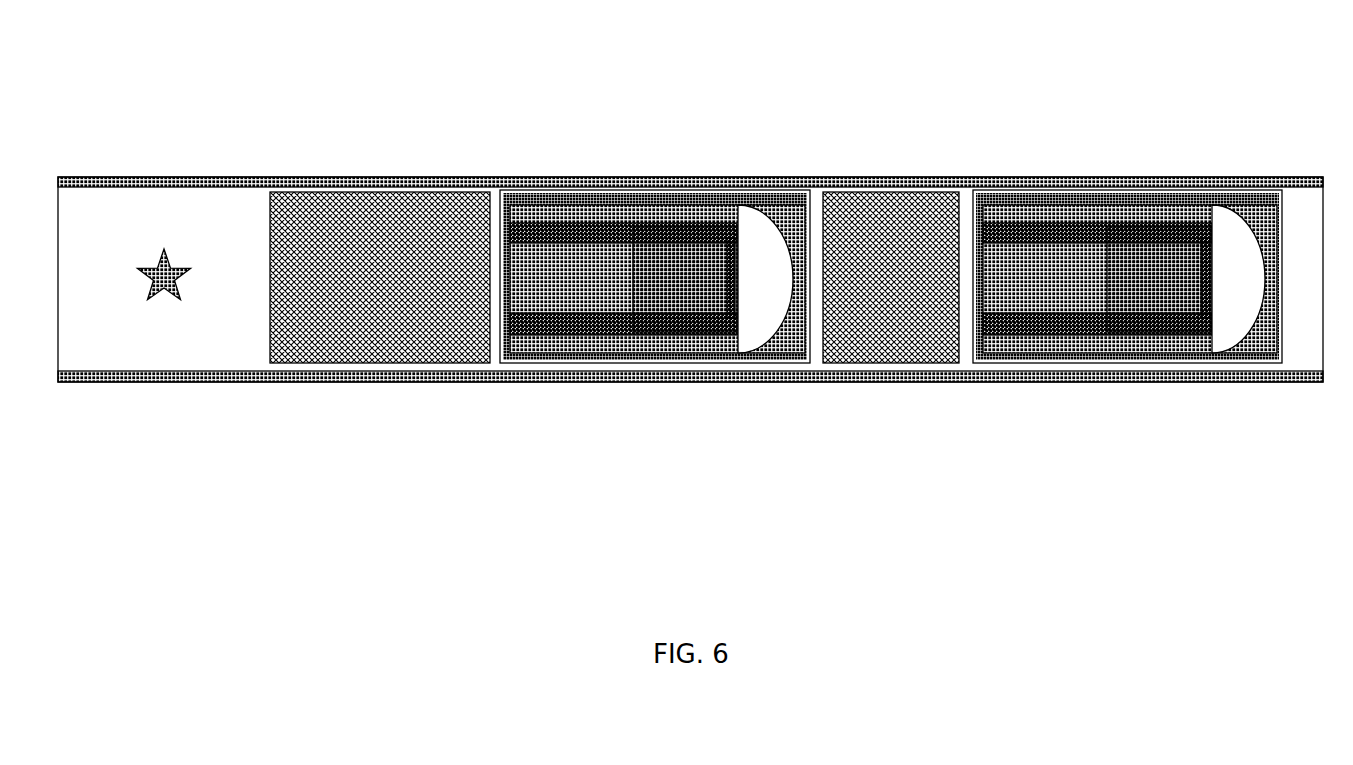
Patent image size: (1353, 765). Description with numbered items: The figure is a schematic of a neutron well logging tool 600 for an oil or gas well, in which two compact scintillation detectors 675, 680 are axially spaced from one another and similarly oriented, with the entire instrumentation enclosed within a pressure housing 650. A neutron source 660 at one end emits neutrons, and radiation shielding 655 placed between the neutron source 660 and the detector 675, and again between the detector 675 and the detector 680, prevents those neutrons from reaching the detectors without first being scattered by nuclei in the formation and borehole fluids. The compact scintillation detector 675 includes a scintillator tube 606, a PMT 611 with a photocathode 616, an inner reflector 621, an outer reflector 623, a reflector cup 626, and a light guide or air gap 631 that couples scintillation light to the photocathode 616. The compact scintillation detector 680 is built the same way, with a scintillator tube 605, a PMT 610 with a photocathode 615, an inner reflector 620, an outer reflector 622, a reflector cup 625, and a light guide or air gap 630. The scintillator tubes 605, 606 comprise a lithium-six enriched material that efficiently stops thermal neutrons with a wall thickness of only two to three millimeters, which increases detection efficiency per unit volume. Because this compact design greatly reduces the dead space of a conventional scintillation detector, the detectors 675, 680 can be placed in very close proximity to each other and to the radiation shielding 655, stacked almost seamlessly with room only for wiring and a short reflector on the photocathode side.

The lighting device 600 is at (403, 152).
The neutron source 660 is at (164, 250).
The pressure housing 650 is at (215, 177).
The scintillator tube 605 is at (977, 352).
The radiation shielding 655 is at (738, 196).
The outer reflector 623 is at (785, 196).
The outer reflector 622 is at (1016, 195).
The inner reflector 620 is at (1017, 222).
The inner reflector 621 is at (537, 212).
The scintillator tube 606 is at (563, 232).
The PMT 611 is at (643, 275).
The photocathode 616 is at (740, 320).
The light guide or air gap 631 is at (756, 308).
The reflector cup 626 is at (794, 337).
The PMT 610 is at (1118, 262).
The light guide or air gap 630 is at (1226, 300).
The reflector cup 625 is at (1262, 335).
The photocathode 615 is at (1213, 237).
The compact scintillation detector 675 is at (565, 335).
The compact scintillation detector 680 is at (1097, 348).